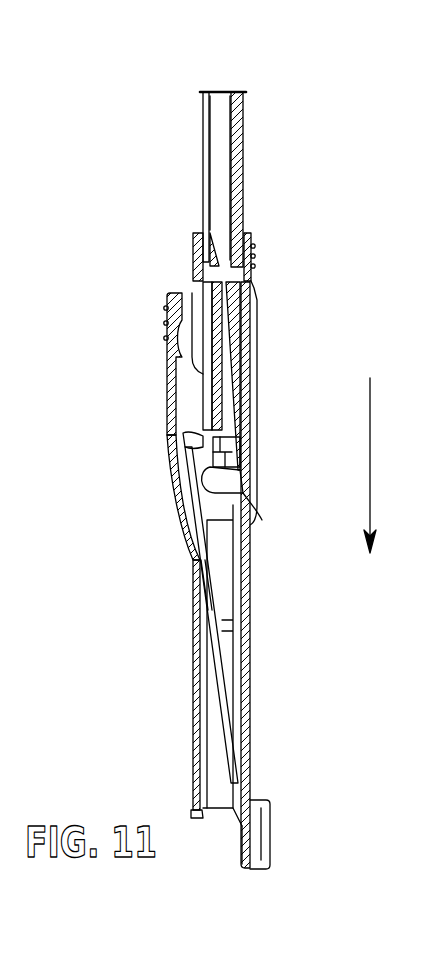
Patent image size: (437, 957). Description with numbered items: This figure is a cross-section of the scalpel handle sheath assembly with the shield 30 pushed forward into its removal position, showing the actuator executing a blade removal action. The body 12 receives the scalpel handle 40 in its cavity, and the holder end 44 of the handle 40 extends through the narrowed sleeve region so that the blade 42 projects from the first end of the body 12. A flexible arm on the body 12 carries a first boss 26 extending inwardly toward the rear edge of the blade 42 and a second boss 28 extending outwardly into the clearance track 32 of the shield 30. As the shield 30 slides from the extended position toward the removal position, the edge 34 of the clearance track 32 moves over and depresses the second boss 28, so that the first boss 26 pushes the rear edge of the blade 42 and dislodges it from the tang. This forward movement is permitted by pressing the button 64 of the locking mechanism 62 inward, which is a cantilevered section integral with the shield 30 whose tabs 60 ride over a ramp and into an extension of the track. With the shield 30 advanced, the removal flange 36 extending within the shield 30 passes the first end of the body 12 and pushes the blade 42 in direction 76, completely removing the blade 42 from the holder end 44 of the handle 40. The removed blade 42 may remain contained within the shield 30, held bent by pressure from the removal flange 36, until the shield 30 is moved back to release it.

The body 12 is at (245, 133).
The handle 40 is at (222, 123).
The locking mechanism 62 is at (172, 284).
The tabs 60 is at (193, 300).
The button 64 is at (168, 337).
The removal flange 36 is at (203, 397).
The edge 34 is at (232, 447).
The second boss 28 is at (245, 480).
The first boss 26 is at (178, 485).
The shield 30 is at (192, 670).
The holder end 44 is at (225, 587).
The blade 42 is at (220, 703).
The clearance track 32 is at (250, 713).
The direction 76 is at (368, 470).